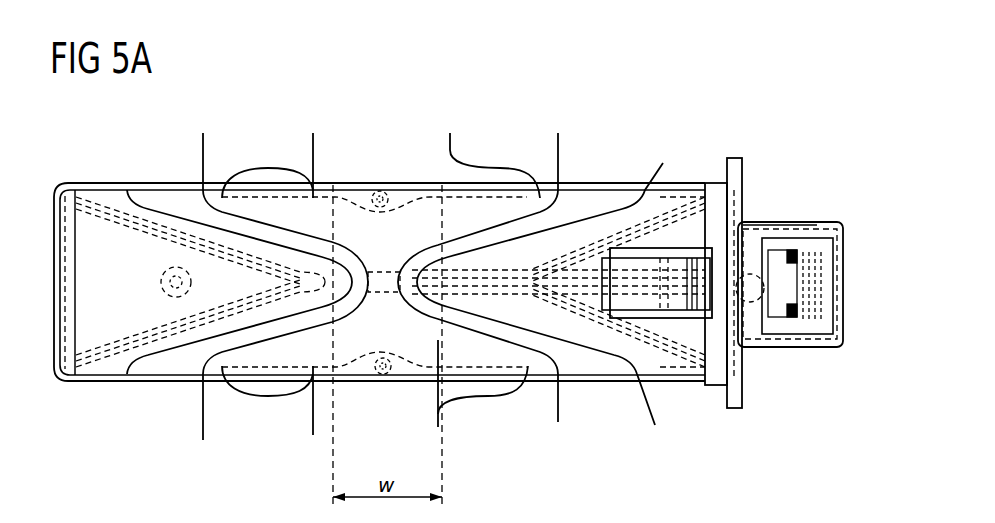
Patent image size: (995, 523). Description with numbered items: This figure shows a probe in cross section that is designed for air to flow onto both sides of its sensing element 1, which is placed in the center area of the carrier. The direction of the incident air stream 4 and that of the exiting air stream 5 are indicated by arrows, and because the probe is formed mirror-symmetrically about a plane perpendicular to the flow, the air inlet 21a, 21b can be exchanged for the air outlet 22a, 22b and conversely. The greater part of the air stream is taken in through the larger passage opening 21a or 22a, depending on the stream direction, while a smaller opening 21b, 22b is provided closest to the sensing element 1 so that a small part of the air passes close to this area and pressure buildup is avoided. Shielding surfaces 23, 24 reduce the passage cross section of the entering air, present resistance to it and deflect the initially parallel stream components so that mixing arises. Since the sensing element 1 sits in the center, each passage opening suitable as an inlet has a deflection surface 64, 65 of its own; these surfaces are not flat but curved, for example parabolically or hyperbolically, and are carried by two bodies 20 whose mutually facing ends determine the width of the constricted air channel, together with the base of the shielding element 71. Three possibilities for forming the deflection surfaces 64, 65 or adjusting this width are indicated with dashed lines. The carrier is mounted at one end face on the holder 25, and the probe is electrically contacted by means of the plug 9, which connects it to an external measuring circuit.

The sensing element 1 is at (388, 298).
The incident air stream 4 is at (127, 188).
The exiting air stream 5 is at (127, 376).
The plug 9 is at (780, 223).
The body of the carrier 20 is at (92, 338).
The air inlet (larger passage opening) 21a is at (175, 178).
The air inlet (smaller passage opening) 21b is at (603, 178).
The air outlet (larger passage opening) 22a is at (176, 390).
The air outlet (smaller passage opening) 22b is at (606, 390).
The shielding surface 23 is at (398, 196).
The shielding surface 24 is at (400, 378).
The holder 25 is at (715, 385).
The deflection surface 64 is at (220, 257).
The deflection surface 65 is at (222, 310).
The shielding element 71 is at (347, 188).